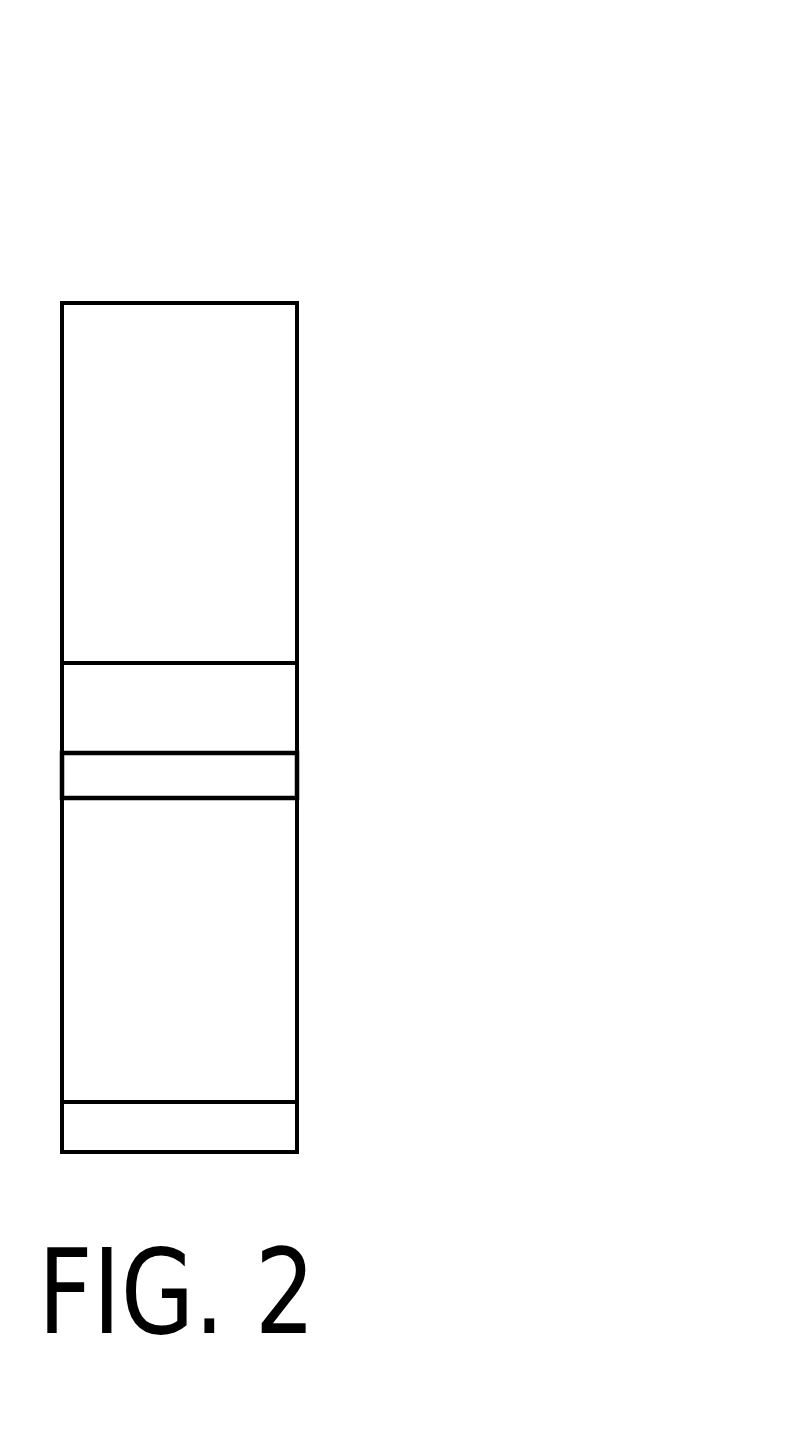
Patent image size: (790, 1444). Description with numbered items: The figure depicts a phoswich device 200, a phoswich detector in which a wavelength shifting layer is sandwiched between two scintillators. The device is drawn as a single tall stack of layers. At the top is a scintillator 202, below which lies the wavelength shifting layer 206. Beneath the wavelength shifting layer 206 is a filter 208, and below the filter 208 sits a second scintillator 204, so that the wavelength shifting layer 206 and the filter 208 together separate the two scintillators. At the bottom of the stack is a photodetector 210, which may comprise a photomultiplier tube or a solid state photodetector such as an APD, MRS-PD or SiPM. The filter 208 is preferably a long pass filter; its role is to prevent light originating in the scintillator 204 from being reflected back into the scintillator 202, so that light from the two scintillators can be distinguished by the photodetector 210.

The phoswich device 200 is at (300, 122).
The scintillator 202 is at (263, 493).
The scintillator 204 is at (263, 960).
The wavelength shifting layer 206 is at (263, 718).
The filter 208 is at (263, 777).
The photodetector 210 is at (263, 1132).